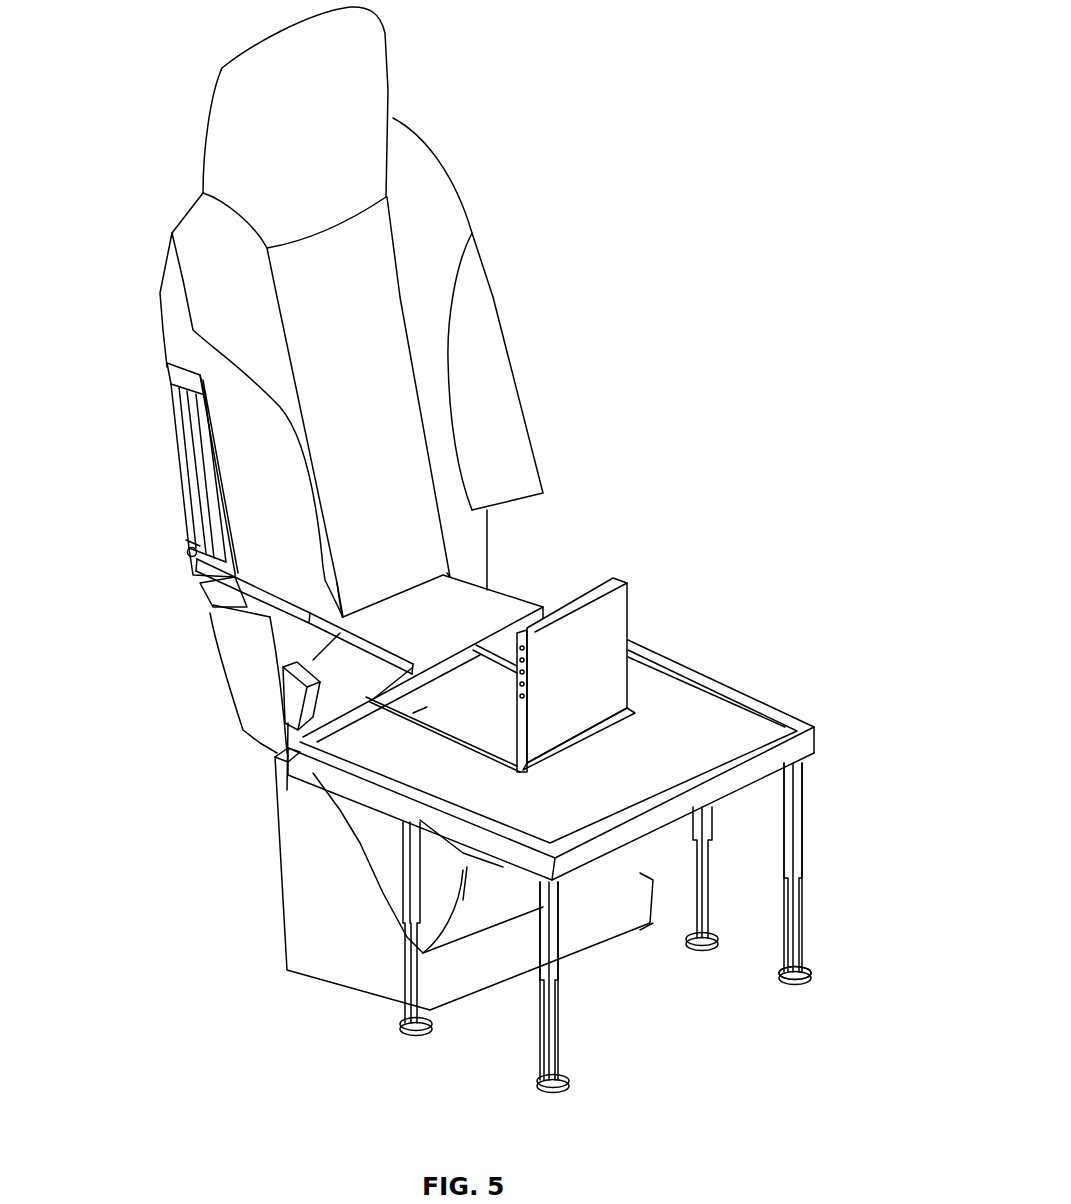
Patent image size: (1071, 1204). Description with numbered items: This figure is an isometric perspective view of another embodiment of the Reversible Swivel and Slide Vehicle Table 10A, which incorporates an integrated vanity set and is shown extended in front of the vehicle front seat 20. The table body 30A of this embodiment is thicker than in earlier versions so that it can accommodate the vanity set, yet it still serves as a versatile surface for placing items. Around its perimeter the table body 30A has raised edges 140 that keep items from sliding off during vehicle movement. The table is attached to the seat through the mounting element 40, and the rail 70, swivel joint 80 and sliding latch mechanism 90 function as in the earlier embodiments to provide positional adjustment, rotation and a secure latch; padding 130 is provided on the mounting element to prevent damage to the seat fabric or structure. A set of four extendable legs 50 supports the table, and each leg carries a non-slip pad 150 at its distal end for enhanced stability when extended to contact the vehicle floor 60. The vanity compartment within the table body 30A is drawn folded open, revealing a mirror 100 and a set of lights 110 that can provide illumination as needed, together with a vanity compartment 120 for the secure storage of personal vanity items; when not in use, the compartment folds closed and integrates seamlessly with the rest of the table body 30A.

The Reversible Swivel and Slide Vehicle Table 10A is at (472, 564).
The vehicle front seat 20 is at (217, 82).
The table body 30A is at (788, 714).
The mounting element 40 is at (177, 425).
The extendable legs 50 is at (800, 988).
The vehicle floor 60 is at (527, 1088).
The rail 70 is at (268, 622).
The swivel joint 80 is at (187, 555).
The sliding latch mechanism 90 is at (190, 543).
The mirror 100 is at (605, 670).
The set of lights 110 is at (530, 634).
The vanity compartment 120 is at (280, 749).
The padding 130 is at (215, 612).
The raised edges 140 is at (755, 723).
The non-slip pads 150 is at (813, 975).